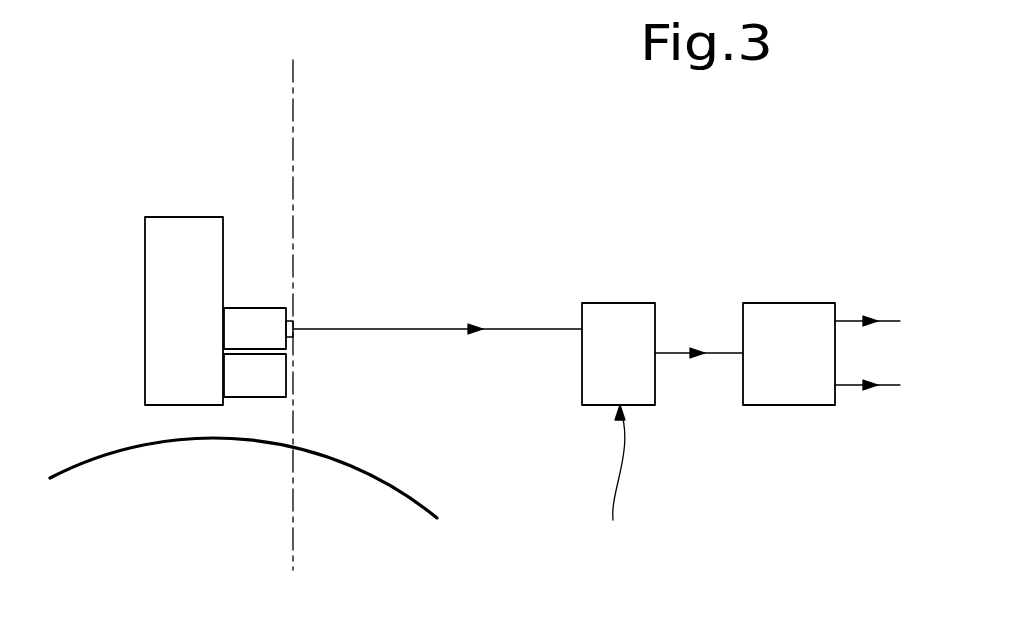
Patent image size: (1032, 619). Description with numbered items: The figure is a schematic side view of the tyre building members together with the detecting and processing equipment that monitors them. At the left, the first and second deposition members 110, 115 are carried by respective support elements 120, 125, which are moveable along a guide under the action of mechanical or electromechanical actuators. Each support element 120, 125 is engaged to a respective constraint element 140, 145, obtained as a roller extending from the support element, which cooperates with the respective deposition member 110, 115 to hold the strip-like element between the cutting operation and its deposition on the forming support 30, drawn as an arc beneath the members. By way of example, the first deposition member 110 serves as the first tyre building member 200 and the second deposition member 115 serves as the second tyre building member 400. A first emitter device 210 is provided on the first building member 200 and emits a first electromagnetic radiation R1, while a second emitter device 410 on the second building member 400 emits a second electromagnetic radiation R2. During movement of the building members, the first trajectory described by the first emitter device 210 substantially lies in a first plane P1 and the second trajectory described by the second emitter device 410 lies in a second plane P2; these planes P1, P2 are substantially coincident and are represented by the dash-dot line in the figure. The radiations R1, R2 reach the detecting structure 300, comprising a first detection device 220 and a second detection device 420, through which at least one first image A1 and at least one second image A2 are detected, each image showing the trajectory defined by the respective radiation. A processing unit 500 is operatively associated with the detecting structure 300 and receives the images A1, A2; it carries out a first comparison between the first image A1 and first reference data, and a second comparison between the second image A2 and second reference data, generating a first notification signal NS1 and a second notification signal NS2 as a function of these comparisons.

The forming support 30 is at (143, 480).
The first deposition member 110 is at (239, 231).
The second deposition member 115 is at (257, 325).
The support element 120 is at (140, 235).
The support element 125 is at (182, 247).
The constraint element 140 is at (357, 396).
The constraint element 145 is at (273, 379).
The first tyre building member 200 is at (337, 231).
The second tyre building member 400 is at (337, 231).
The first emitter device 210 is at (384, 267).
The second emitter device 410 is at (293, 322).
The first detection device 220 is at (611, 269).
The second detection device 420 is at (618, 318).
The detecting structure 300 is at (612, 481).
The processing unit 500 is at (788, 320).
The first plane P1 is at (377, 312).
The second plane P2 is at (293, 90).
The first electromagnetic radiation R1 is at (437, 290).
The second electromagnetic radiation R2 is at (482, 326).
The first image A1 is at (700, 430).
The second image A2 is at (702, 355).
The first notification signal NS1 is at (871, 319).
The second notification signal NS2 is at (871, 387).